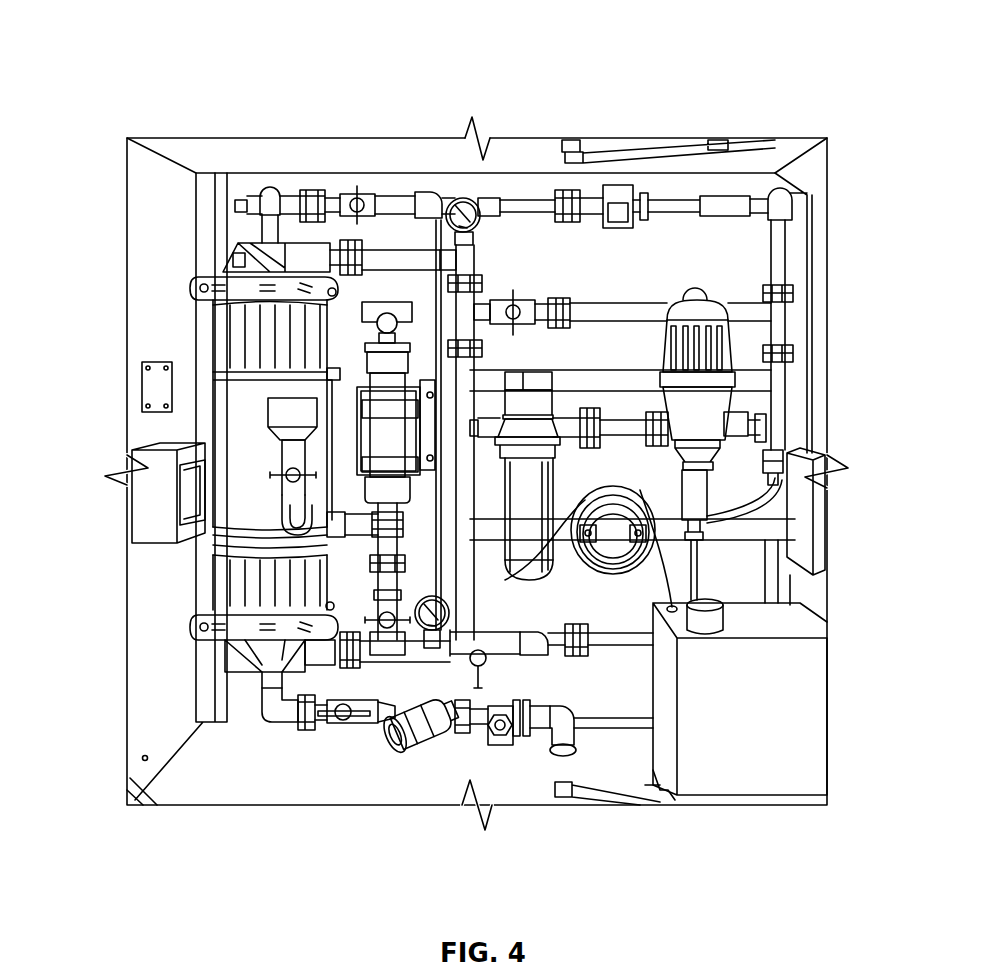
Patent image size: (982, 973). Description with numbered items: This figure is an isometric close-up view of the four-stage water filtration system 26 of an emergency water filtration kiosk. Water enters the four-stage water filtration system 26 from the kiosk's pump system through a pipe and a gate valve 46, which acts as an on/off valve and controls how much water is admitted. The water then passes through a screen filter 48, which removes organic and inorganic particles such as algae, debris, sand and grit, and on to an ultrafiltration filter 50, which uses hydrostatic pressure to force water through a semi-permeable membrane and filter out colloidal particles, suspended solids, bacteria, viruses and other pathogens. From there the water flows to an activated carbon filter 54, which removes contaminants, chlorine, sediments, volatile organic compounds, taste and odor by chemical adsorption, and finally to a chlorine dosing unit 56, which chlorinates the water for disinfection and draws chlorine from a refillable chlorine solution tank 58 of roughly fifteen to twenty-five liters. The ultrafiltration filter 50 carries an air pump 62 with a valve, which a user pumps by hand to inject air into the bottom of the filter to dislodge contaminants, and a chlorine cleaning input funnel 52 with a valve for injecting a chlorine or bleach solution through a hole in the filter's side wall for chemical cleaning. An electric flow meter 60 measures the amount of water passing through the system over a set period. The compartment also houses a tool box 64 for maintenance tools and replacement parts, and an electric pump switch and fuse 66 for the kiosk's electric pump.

The four-stage water filtration system 26 is at (840, 74).
The gate valve 46 is at (495, 752).
The screen filter 48 is at (403, 752).
The ultrafiltration filter 50 is at (278, 350).
The chlorine cleaning input funnel 52 is at (298, 407).
The activated carbon filter 54 is at (537, 498).
The chlorine dosing unit 56 is at (730, 368).
The refillable chlorine solution tank 58 is at (783, 730).
The electric flow meter 60 is at (618, 207).
The air pump 62 is at (388, 358).
The tool box 64 is at (800, 470).
The electric pump switch and fuse 66 is at (148, 460).